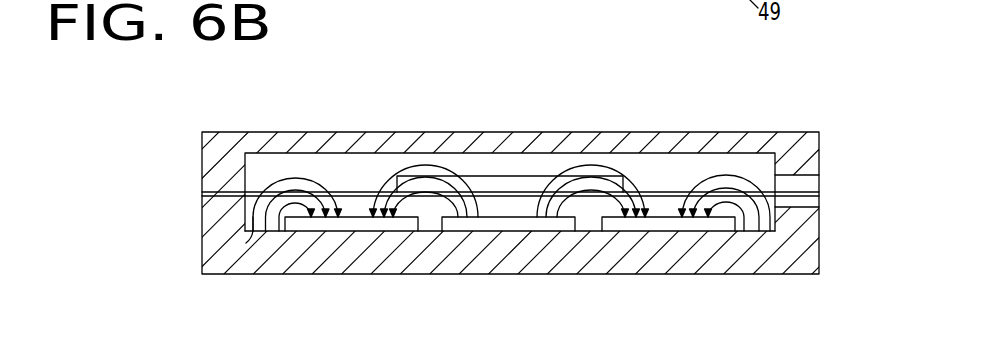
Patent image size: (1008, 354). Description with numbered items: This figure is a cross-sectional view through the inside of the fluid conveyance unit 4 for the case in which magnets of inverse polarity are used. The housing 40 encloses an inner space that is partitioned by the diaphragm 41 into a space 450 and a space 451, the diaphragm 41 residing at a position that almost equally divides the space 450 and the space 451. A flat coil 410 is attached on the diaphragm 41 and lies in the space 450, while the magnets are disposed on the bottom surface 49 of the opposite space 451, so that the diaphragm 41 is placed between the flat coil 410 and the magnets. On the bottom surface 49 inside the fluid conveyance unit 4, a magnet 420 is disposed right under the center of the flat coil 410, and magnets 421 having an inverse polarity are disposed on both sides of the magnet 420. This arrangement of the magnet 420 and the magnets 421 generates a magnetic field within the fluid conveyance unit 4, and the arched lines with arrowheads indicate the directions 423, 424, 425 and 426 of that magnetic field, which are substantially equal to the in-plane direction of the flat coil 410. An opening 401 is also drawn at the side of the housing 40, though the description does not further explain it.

The fluid conveyance unit 4 is at (227, 109).
The housing 40 is at (202, 157).
The diaphragm 41 is at (202, 194).
The side channel opening 401 is at (810, 183).
The flat coil 410 is at (500, 182).
The magnet 420 is at (508, 229).
The magnets 421 is at (342, 229).
The direction of the magnetic field 423 is at (277, 178).
The direction of the magnetic field 424 is at (415, 163).
The direction of the magnetic field 425 is at (592, 166).
The direction of the magnetic field 426 is at (730, 172).
The bottom surface 49 is at (430, 231).
The space 450 is at (302, 168).
The space 451 is at (246, 243).